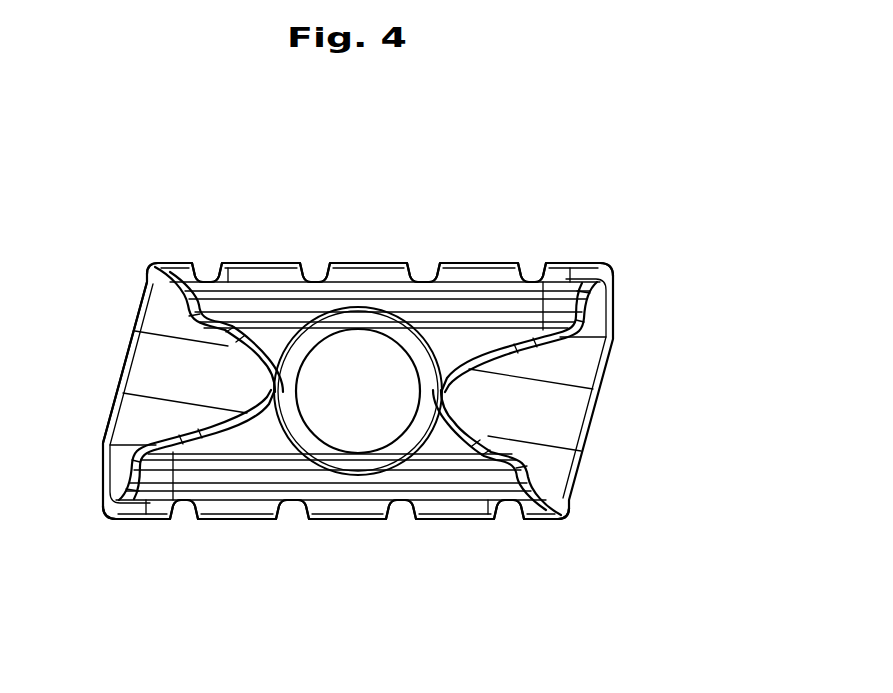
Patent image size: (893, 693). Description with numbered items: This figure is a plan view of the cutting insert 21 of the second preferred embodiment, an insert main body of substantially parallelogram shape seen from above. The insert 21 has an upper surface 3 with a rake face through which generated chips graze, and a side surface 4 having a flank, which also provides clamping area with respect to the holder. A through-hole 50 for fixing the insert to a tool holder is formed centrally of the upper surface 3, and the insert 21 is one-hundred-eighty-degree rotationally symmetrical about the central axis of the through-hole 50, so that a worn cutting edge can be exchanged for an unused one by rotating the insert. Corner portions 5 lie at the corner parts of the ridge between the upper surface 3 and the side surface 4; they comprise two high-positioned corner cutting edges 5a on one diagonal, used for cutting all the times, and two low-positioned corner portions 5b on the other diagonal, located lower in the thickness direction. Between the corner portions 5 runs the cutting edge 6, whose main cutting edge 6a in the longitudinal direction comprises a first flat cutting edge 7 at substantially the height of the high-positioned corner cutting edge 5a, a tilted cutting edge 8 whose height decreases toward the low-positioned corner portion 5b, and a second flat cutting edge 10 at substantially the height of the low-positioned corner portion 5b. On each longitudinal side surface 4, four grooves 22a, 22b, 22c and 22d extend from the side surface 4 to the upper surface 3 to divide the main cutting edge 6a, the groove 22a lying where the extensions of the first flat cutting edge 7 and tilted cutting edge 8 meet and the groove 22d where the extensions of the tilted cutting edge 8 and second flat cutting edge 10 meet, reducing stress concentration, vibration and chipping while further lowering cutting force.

The upper surface 3 is at (167, 365).
The side surface 4 is at (118, 383).
The corner portion 5 is at (373, 396).
The high-positioned corner cutting edge 5a is at (609, 266).
The low-positioned corner portion 5b is at (147, 265).
The cutting edge 6 is at (618, 297).
The main cutting edge 6a is at (185, 168).
The first flat cutting edge 7 is at (575, 265).
The tilted cutting edge 8 is at (260, 265).
The second flat cutting edge 10 is at (167, 265).
The insert 21 is at (608, 470).
The groove 22a is at (531, 276).
The groove 22b is at (424, 276).
The groove 22c is at (317, 276).
The groove 22d is at (210, 276).
The through-hole 50 is at (368, 398).